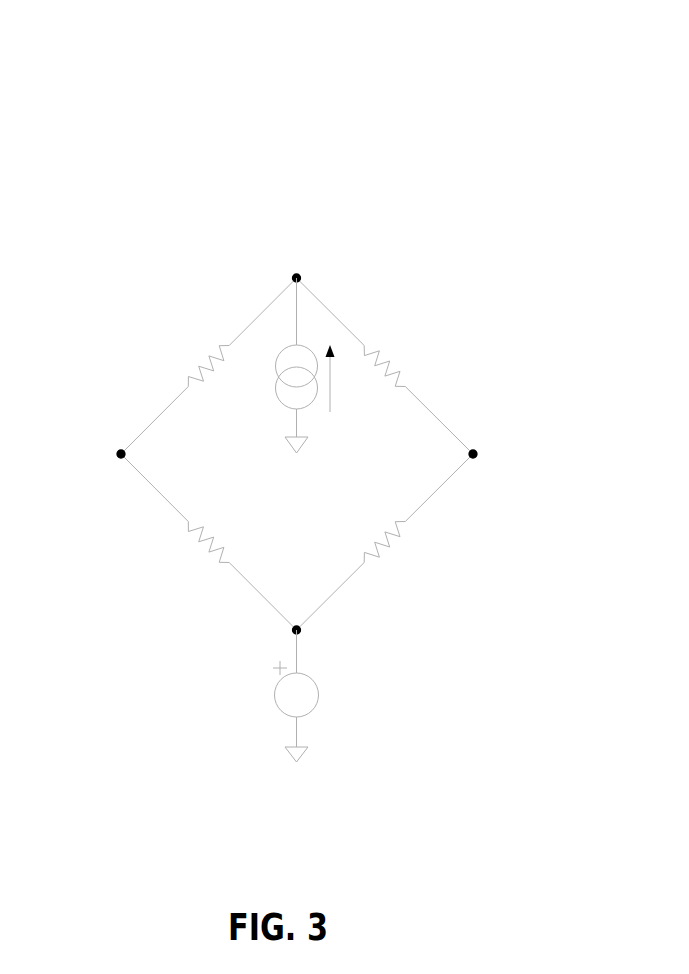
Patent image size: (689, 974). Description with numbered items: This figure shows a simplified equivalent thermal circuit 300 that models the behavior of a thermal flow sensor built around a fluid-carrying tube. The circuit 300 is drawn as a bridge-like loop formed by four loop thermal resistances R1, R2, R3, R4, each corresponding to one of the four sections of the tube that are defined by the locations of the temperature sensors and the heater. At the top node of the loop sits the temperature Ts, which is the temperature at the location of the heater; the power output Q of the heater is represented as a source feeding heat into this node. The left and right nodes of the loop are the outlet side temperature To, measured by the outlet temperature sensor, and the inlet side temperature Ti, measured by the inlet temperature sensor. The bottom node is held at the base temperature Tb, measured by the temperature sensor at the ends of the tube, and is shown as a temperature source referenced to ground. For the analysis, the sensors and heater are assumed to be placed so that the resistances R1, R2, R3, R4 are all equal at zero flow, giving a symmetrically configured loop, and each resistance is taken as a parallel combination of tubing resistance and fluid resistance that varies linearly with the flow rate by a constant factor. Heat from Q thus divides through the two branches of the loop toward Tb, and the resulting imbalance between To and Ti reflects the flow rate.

The simplified equivalent thermal circuit 300 is at (197, 91).
The loop thermal resistance R1 is at (410, 345).
The loop thermal resistance R2 is at (179, 353).
The loop thermal resistance R3 is at (413, 555).
The loop thermal resistance R4 is at (194, 574).
The temperature at the location of the heater Ts is at (281, 261).
The outlet side temperature To is at (101, 453).
The inlet side temperature Ti is at (501, 467).
The power output of the heater Q is at (337, 427).
The base temperature Tb is at (340, 685).